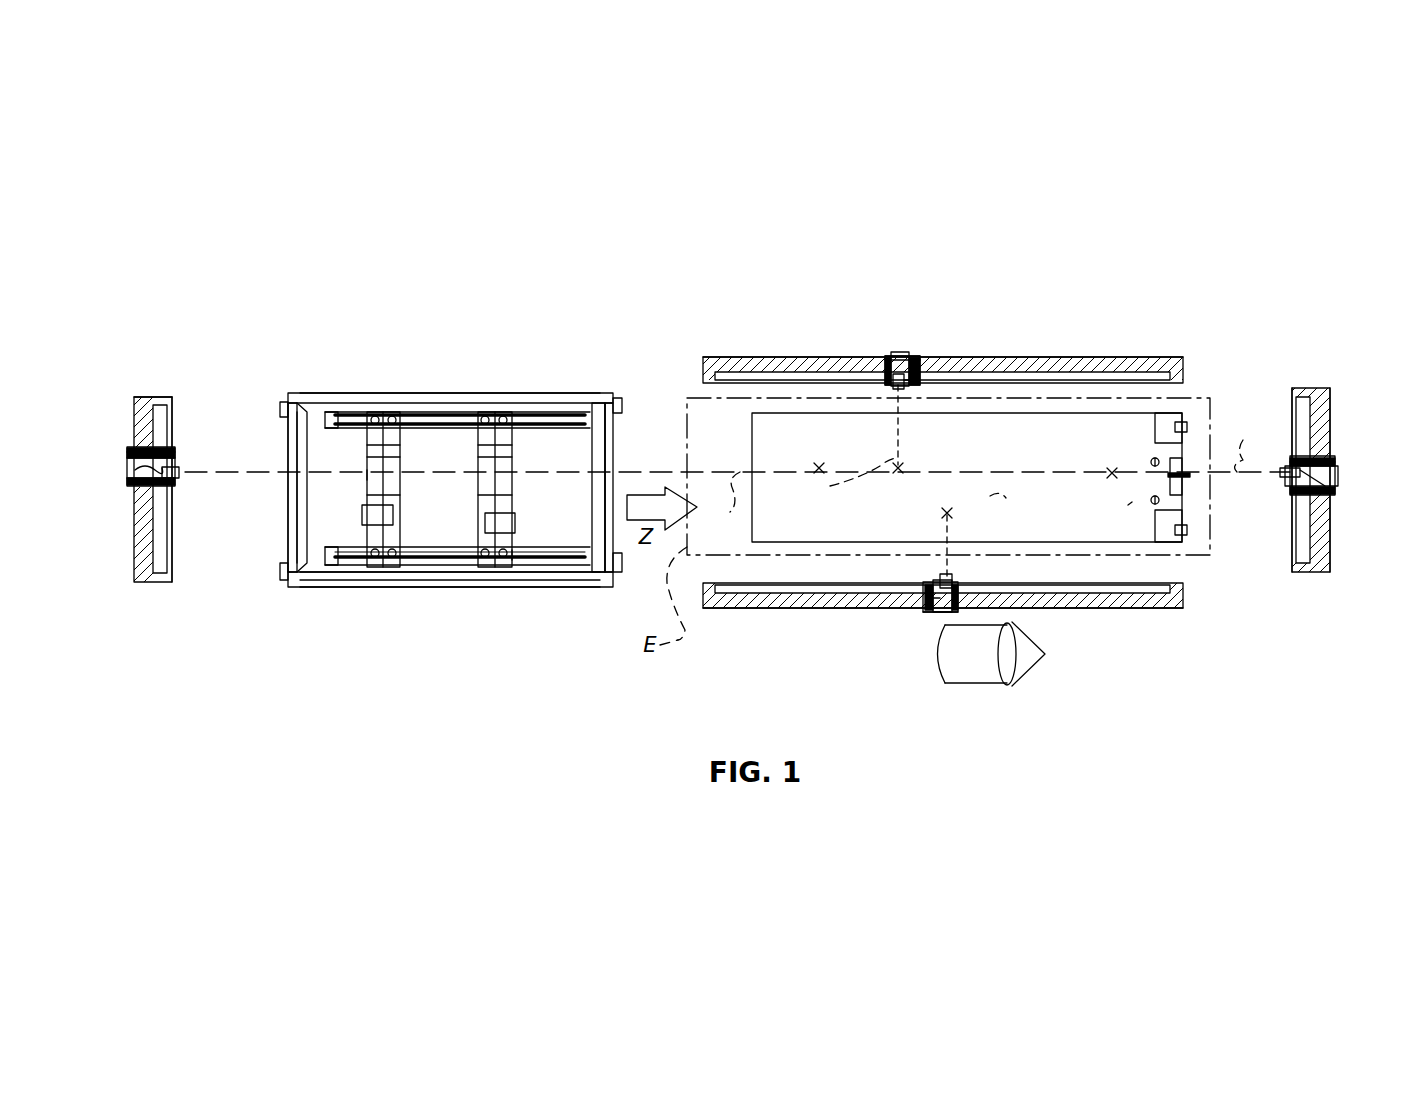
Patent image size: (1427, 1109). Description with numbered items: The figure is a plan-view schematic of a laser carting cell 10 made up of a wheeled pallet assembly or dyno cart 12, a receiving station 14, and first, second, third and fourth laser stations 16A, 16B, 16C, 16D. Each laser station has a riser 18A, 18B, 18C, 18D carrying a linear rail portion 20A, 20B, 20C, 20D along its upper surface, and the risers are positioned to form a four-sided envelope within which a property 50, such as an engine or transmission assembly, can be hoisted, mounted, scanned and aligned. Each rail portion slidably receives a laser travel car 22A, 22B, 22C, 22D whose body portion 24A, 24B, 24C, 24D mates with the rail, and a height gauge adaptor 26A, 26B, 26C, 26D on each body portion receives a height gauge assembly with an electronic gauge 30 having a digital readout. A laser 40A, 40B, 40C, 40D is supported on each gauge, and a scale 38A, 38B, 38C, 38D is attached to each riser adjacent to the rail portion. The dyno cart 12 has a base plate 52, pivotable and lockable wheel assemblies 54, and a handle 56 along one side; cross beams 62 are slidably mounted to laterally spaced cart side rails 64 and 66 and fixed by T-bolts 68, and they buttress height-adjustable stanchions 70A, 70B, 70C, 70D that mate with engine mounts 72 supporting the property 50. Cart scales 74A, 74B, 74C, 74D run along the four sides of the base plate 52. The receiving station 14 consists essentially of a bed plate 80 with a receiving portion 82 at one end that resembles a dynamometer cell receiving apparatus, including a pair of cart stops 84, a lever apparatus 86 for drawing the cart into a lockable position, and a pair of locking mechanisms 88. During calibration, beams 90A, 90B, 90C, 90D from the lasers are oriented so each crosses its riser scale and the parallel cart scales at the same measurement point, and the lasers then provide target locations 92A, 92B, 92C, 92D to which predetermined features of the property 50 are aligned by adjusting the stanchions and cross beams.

The laser carting cell 10 is at (472, 230).
The dyno cart 12 is at (430, 328).
The receiving station 14 is at (1037, 400).
The first laser station 16A is at (905, 335).
The second laser station 16B is at (918, 645).
The third laser station 16C is at (1345, 428).
The fourth laser station 16D is at (215, 410).
The first riser 18A is at (742, 357).
The second riser 18B is at (810, 612).
The third riser 18C is at (1337, 508).
The fourth riser 18D is at (120, 400).
The first rail portion 20A is at (1112, 360).
The second rail portion 20B is at (1112, 606).
The third rail portion 20C is at (1318, 396).
The fourth rail portion 20D is at (143, 574).
The first laser travel car 22A is at (888, 355).
The second laser travel car 22B is at (930, 578).
The third laser travel car 22C is at (1283, 497).
The fourth laser travel car 22D is at (133, 492).
The first body portion 24A is at (895, 389).
The second body portion 24B is at (952, 580).
The third body portion 24C is at (1288, 468).
The fourth body portion 24D is at (180, 472).
The first height gauge adaptor 26A is at (920, 372).
The second height gauge adaptor 26B is at (935, 614).
The third height gauge adaptor 26C is at (1322, 458).
The fourth height gauge adaptor 26D is at (165, 447).
The electronic gauge 30 is at (134, 452).
The first scale 38A is at (742, 374).
The second scale 38B is at (742, 597).
The third scale 38C is at (1302, 562).
The fourth scale 38D is at (168, 566).
The first laser 40A is at (906, 386).
The second laser 40B is at (925, 606).
The third laser 40C is at (1318, 530).
The fourth laser 40D is at (135, 470).
The property 50 is at (992, 654).
The base plate 52 is at (336, 586).
The wheel assemblies 54 is at (284, 403).
The handle 56 is at (295, 560).
The cross beams 62 is at (430, 560).
The first cart side rail 64 is at (560, 566).
The second cart side rail 66 is at (555, 414).
The T-bolts 68 is at (392, 416).
The first stanchion 70A is at (367, 440).
The second stanchion 70B is at (500, 411).
The third stanchion 70C is at (540, 560).
The fourth stanchion 70D is at (367, 483).
The engine mount 72 is at (362, 517).
The fifth scale 74A is at (305, 394).
The sixth scale 74B is at (330, 586).
The seventh scale 74C is at (605, 398).
The eighth scale 74D is at (290, 447).
The bed plate 80 is at (967, 477).
The receiving portion 82 is at (1128, 505).
The cart stops 84 is at (1152, 459).
The lever apparatus 86 is at (1168, 476).
The locking mechanisms 88 is at (1183, 424).
The laser beam 90A is at (830, 487).
The laser beam 90B is at (970, 510).
The laser beam 90C is at (1237, 445).
The laser beam 90D is at (724, 505).
The target location 92A is at (896, 473).
The target location 92B is at (950, 509).
The target location 92C is at (1108, 472).
The target location 92D is at (818, 463).